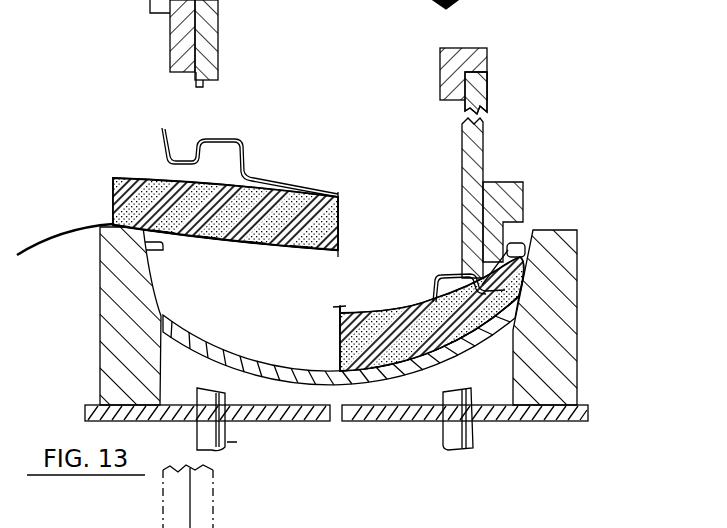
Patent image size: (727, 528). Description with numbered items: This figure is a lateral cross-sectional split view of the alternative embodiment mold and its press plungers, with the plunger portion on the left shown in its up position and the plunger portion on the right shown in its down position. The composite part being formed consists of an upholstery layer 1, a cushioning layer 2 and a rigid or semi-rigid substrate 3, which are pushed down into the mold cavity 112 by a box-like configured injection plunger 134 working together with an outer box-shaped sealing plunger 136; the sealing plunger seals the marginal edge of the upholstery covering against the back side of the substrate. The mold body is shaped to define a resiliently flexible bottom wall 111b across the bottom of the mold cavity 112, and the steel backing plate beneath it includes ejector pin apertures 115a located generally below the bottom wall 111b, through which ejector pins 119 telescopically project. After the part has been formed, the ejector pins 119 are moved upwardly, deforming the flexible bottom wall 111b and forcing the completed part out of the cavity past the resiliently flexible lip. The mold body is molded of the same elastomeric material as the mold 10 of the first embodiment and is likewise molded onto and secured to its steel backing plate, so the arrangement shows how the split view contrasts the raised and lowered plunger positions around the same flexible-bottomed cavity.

The upholstery layer 1 is at (78, 227).
The cushioning layer 2 is at (112, 193).
The substrate 3 is at (160, 150).
The mold 10 is at (595, 317).
The mold cavity 112 is at (251, 322).
The bottom wall 111b is at (288, 381).
The ejector pin apertures 115a is at (399, 11).
The ejector pins 119 is at (215, 450).
The injection plunger 134 is at (462, 180).
The sealing plunger 136 is at (175, 50).